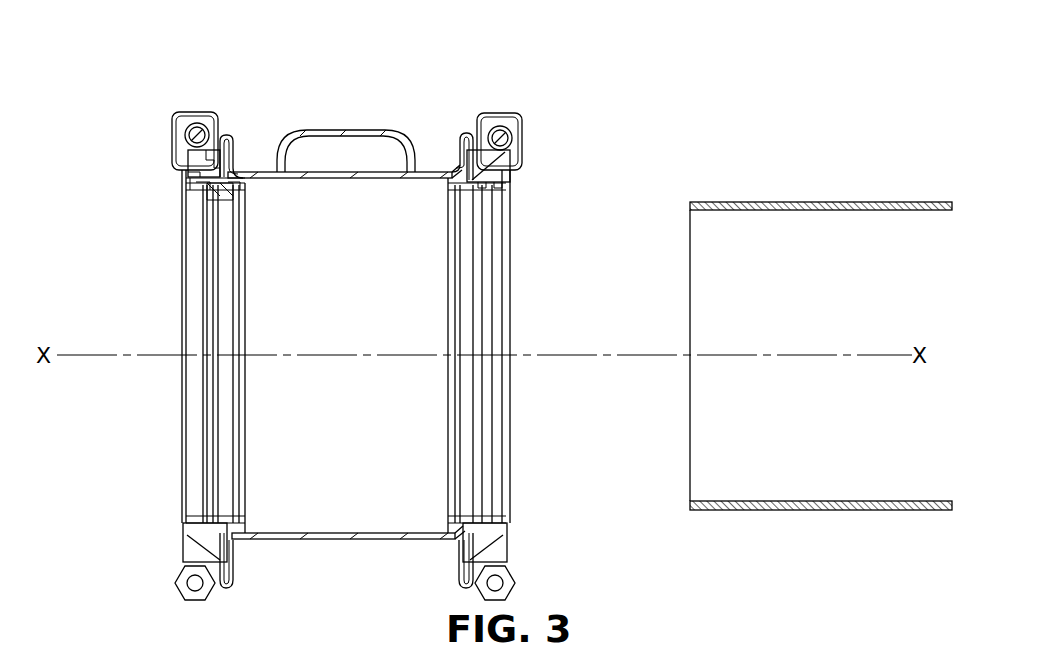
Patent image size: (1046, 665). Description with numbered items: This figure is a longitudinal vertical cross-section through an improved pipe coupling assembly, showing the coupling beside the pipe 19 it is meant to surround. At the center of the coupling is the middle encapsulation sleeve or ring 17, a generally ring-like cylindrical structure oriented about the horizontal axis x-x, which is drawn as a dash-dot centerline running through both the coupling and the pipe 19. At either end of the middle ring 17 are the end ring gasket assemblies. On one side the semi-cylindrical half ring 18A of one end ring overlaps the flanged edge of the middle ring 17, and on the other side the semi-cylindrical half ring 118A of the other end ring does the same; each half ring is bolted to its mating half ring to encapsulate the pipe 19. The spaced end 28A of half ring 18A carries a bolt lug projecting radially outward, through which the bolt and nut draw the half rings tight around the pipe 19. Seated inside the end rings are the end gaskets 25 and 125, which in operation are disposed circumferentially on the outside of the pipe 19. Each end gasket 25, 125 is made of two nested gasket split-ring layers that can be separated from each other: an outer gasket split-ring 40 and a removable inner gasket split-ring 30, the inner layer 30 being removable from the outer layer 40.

The middle encapsulation sleeve or ring 17 is at (327, 182).
The pipe 19 is at (797, 202).
The end gasket 25 is at (183, 180).
The spaced end 28A is at (157, 113).
The semi-cylindrical half ring 18A is at (227, 128).
The semi-cylindrical half ring 118A is at (458, 133).
The outer gasket split-ring 40 is at (217, 157).
The inner gasket split-ring 30 is at (217, 183).
The end gasket 125 is at (505, 181).